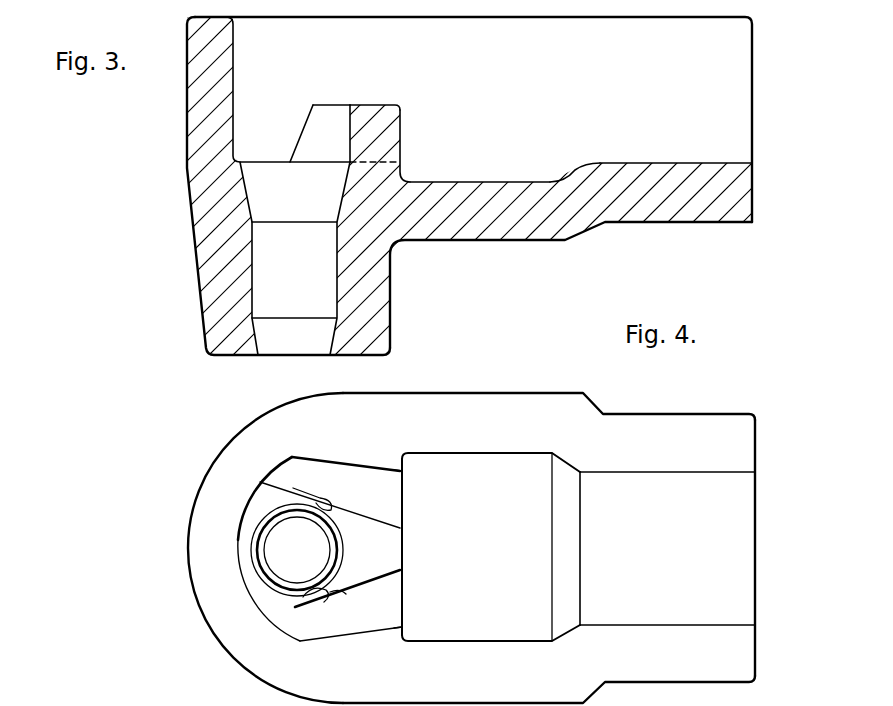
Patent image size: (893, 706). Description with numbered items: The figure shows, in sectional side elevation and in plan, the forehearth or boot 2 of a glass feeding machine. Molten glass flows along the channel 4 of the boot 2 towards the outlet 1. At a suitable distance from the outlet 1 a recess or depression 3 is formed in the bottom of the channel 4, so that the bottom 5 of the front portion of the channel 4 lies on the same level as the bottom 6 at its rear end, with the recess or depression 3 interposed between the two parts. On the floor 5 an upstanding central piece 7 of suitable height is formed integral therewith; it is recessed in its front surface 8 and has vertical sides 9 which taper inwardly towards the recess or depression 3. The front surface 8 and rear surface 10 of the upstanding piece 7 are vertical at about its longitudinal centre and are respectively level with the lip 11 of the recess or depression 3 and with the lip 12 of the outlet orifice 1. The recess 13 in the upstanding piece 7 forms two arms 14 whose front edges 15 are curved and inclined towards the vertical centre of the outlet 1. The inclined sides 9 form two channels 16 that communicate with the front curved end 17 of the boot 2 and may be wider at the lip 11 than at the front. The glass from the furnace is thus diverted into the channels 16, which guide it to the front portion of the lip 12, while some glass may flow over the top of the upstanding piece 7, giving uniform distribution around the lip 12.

In FIG. 3, the outlet 1 is at (301, 258).
In FIG. 4, the outlet 1 is at (272, 557).
In FIG. 3, the boot 2 is at (646, 216).
In FIG. 4, the boot 2 is at (667, 551).
In FIG. 3, the recess or depression 3 is at (535, 180).
In FIG. 4, the recess or depression 3 is at (491, 547).
In FIG. 3, the channel 4 is at (473, 119).
In FIG. 4, the channel 4 is at (745, 477).
In FIG. 3, the bottom of the front portion of the channel 5 is at (240, 154).
In FIG. 4, the bottom of the front portion of the channel 5 is at (262, 608).
In FIG. 3, the bottom at the rear end 6 is at (725, 163).
In FIG. 4, the bottom at the rear end 6 is at (634, 548).
In FIG. 3, the upstanding central piece 7 is at (397, 115).
In FIG. 3, the front surface 8 is at (350, 108).
In FIG. 4, the front surface 8 is at (345, 570).
In FIG. 4, the vertical sides 9 is at (404, 522).
In FIG. 3, the rear surface 10 is at (403, 132).
In FIG. 4, the rear surface 10 is at (404, 548).
In FIG. 3, the lip of the recess 11 is at (403, 170).
In FIG. 4, the lip of the recess 11 is at (408, 476).
In FIG. 4, the lip of the outlet orifice 12 is at (342, 553).
In FIG. 4, the recess in the upstanding portion 13 is at (342, 537).
In FIG. 3, the arms 14 is at (322, 117).
In FIG. 4, the arms 14 is at (328, 500).
In FIG. 3, the front edges 15 is at (299, 137).
In FIG. 4, the front edges 15 is at (272, 483).
In FIG. 4, the channels 16 is at (350, 476).
In FIG. 3, the front curved end 17 is at (233, 42).
In FIG. 4, the front curved end 17 is at (250, 505).